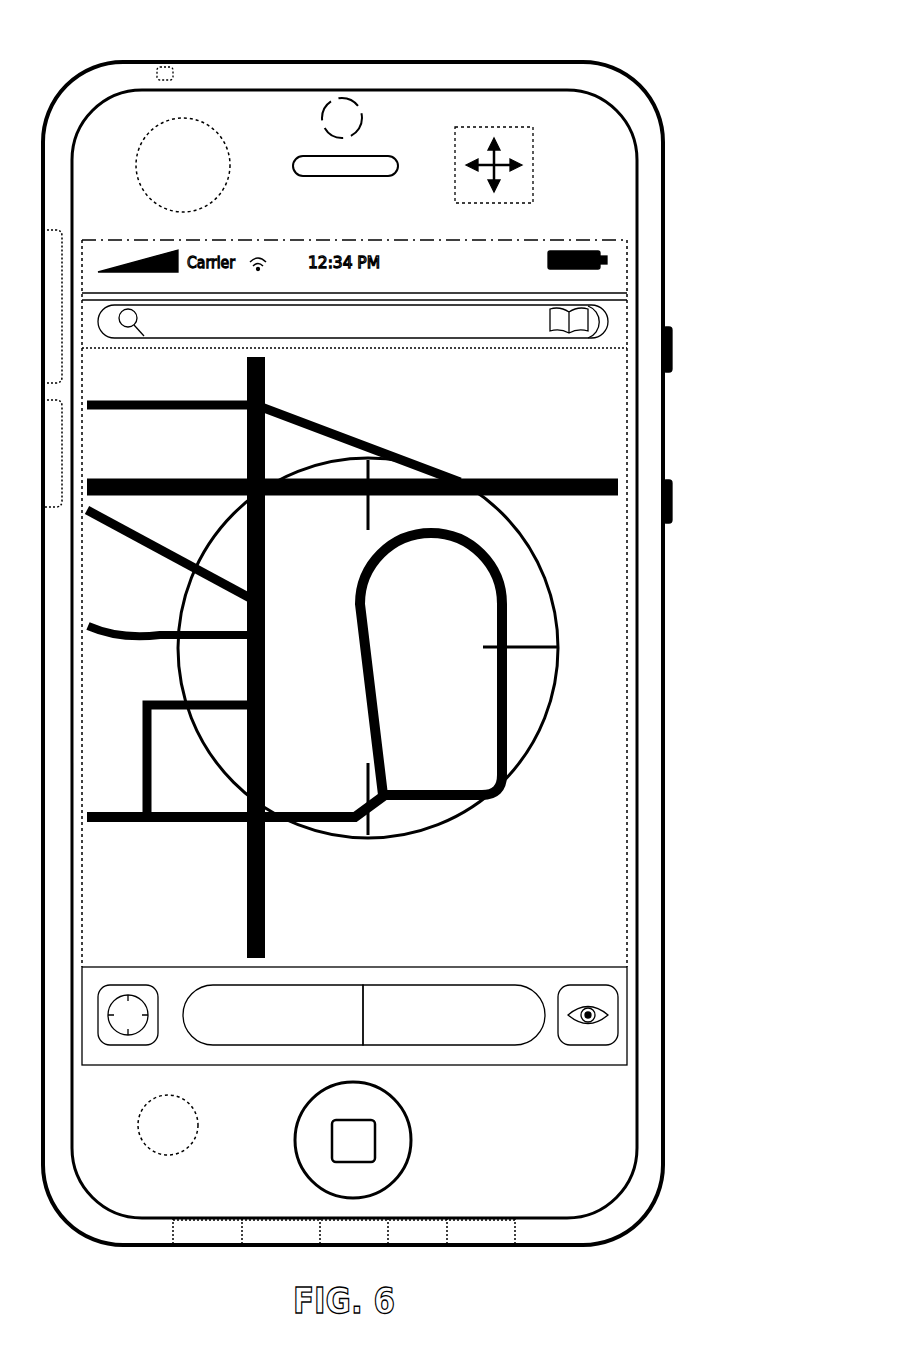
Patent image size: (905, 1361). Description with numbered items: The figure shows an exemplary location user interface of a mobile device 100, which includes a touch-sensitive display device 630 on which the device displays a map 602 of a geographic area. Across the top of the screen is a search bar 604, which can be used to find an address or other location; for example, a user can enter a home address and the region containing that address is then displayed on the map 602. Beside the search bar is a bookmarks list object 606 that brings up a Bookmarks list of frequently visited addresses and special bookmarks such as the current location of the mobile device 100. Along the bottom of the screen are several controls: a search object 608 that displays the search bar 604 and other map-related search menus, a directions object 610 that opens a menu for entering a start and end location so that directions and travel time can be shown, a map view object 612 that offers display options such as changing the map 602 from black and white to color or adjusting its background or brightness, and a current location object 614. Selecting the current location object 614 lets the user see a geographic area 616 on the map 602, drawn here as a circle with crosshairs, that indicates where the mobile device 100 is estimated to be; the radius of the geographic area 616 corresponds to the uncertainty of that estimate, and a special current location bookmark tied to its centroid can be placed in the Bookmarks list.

The mobile device 100 is at (523, 62).
The map 602 is at (587, 412).
The search bar 604 is at (398, 307).
The bookmarks list object 606 is at (548, 308).
The search object 608 is at (281, 1047).
The directions object 610 is at (445, 1047).
The map view object 612 is at (601, 1047).
The current location object 614 is at (141, 1047).
The geographic area 616 is at (400, 833).
The touch-sensitive display device 630 is at (627, 850).